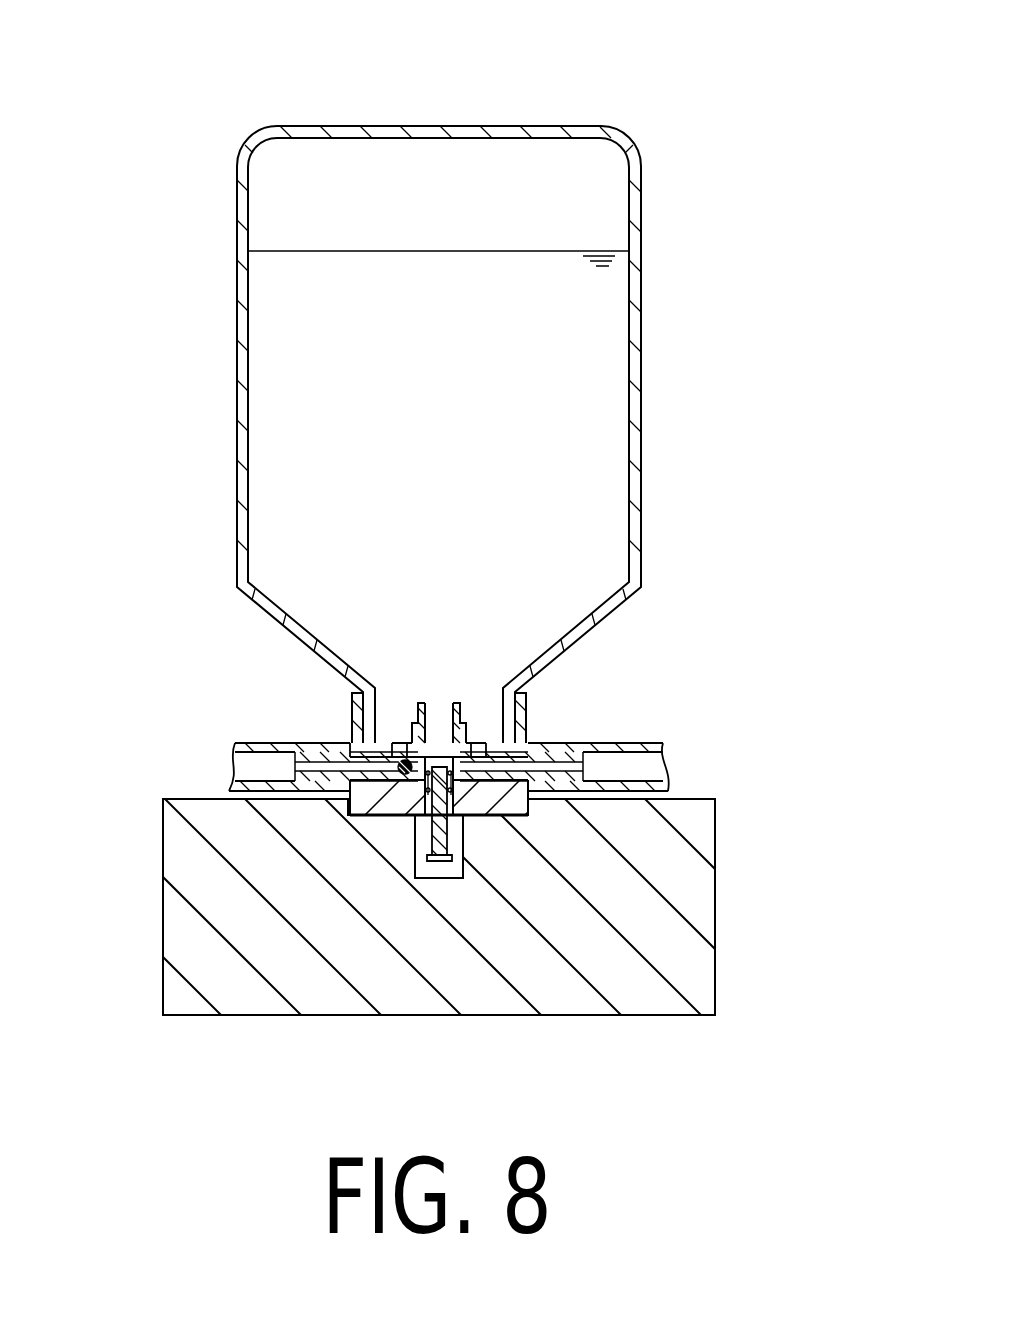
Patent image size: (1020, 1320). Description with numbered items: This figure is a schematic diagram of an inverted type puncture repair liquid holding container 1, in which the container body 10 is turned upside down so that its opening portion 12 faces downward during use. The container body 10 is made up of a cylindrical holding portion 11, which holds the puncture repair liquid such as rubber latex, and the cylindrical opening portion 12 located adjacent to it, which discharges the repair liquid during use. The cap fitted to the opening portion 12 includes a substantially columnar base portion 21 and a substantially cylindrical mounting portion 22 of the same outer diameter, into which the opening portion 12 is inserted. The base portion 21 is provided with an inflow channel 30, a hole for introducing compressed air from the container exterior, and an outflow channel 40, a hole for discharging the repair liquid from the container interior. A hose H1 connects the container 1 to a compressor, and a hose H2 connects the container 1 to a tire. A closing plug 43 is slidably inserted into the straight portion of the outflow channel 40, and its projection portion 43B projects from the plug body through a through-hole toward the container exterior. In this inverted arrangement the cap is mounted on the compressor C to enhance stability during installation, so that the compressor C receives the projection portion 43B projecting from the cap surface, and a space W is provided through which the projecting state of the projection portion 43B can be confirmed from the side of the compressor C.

The puncture repair liquid holding container 1 is at (468, 98).
The container body 10 is at (640, 152).
The holding portion 11 is at (638, 354).
The opening portion 12 is at (507, 730).
The base portion 21 is at (398, 770).
The mounting portion 22 is at (520, 722).
The inflow channel 30 is at (356, 756).
The outflow channel 40 is at (613, 757).
The closing plug 43 is at (428, 797).
The projection portion 43B is at (450, 860).
The hose H1 is at (242, 741).
The hose H2 is at (640, 741).
The space W is at (466, 845).
The compressor C is at (693, 957).